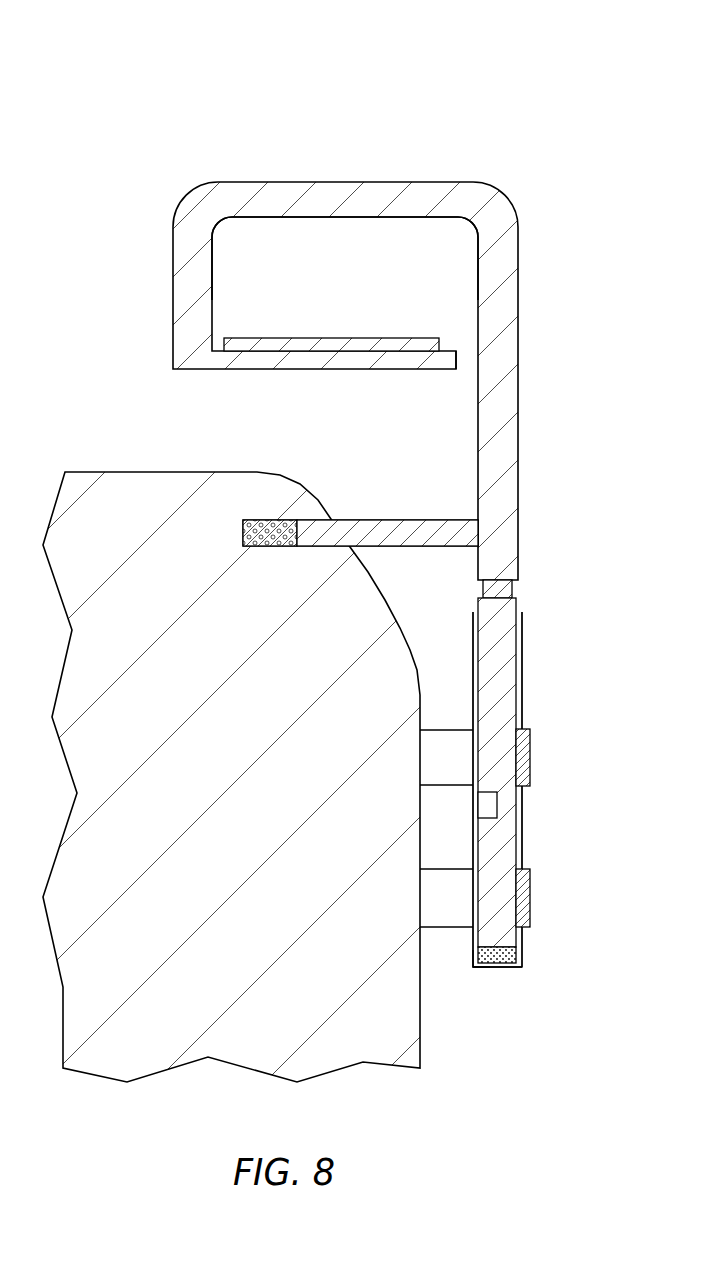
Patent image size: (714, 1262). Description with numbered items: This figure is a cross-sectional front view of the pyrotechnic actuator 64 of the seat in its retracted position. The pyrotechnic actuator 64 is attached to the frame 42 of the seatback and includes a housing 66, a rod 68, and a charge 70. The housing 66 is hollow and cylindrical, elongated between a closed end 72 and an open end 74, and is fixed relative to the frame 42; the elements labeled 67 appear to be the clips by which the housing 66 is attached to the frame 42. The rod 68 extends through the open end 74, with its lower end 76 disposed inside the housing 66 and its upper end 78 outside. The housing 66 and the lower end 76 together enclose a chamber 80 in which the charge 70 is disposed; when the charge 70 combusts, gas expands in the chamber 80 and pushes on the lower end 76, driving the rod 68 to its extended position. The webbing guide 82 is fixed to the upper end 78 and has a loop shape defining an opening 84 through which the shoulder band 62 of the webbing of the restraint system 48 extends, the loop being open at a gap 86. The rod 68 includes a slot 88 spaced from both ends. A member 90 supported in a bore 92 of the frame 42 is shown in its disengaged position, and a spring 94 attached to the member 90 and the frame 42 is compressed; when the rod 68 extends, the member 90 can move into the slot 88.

The frame 42 is at (135, 470).
The restraint system 48 is at (345, 306).
The shoulder band 62 is at (338, 337).
The pyrotechnic actuator 64 is at (520, 794).
The housing 66 is at (522, 947).
The spacer 67 is at (530, 752).
The rod 68 is at (520, 700).
The charge 70 is at (519, 957).
The closed end 72 is at (503, 968).
The open end 74 is at (520, 612).
The lower end 76 is at (484, 953).
The upper end 78 is at (483, 597).
The chamber 80 is at (482, 968).
The webbing guide 82 is at (250, 182).
The opening 84 is at (275, 216).
The gap 86 is at (455, 356).
The slot 88 is at (497, 800).
The member 90 is at (355, 537).
The bore 92 is at (315, 548).
The spring 94 is at (262, 548).